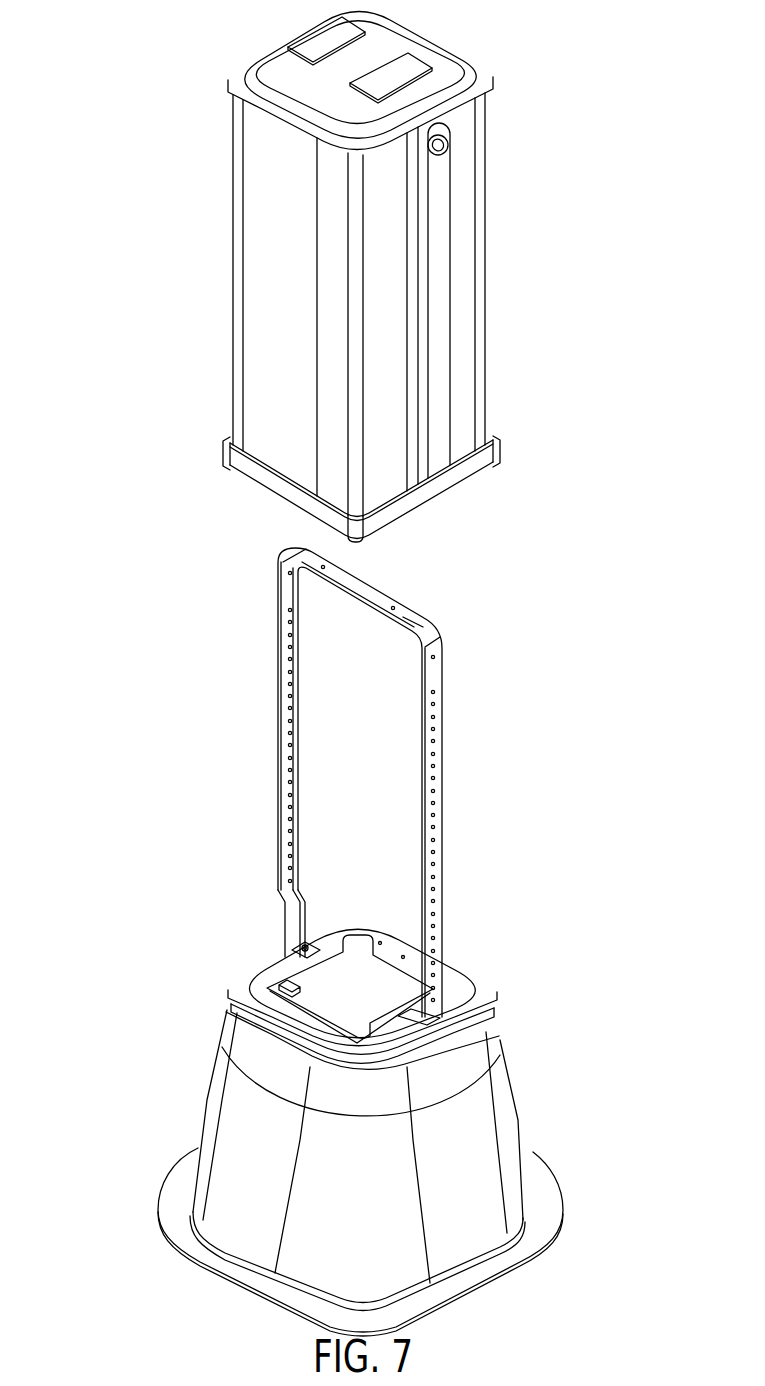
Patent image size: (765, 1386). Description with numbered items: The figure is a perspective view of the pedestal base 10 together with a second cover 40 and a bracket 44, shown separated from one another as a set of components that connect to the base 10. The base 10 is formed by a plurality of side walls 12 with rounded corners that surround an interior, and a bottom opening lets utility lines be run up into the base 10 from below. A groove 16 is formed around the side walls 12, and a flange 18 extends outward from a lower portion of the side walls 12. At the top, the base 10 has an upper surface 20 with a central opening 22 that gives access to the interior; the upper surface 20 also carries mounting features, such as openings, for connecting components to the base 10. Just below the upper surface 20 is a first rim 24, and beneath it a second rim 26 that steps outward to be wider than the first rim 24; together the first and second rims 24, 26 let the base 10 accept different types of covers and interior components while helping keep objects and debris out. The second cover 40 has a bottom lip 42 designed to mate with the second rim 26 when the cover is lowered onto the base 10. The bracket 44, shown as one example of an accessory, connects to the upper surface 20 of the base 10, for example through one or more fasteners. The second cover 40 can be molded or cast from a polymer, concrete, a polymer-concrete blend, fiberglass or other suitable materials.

The base 10 is at (105, 1060).
The side walls 12 is at (223, 1140).
The groove 16 is at (487, 1055).
The flange 18 is at (180, 1227).
The upper surface 20 is at (282, 967).
The central opening 22 is at (308, 1000).
The first rim 24 is at (475, 985).
The second rim 26 is at (487, 1010).
The second cover 40 is at (505, 340).
The bottom lip 42 is at (475, 478).
The bracket 44 is at (440, 783).